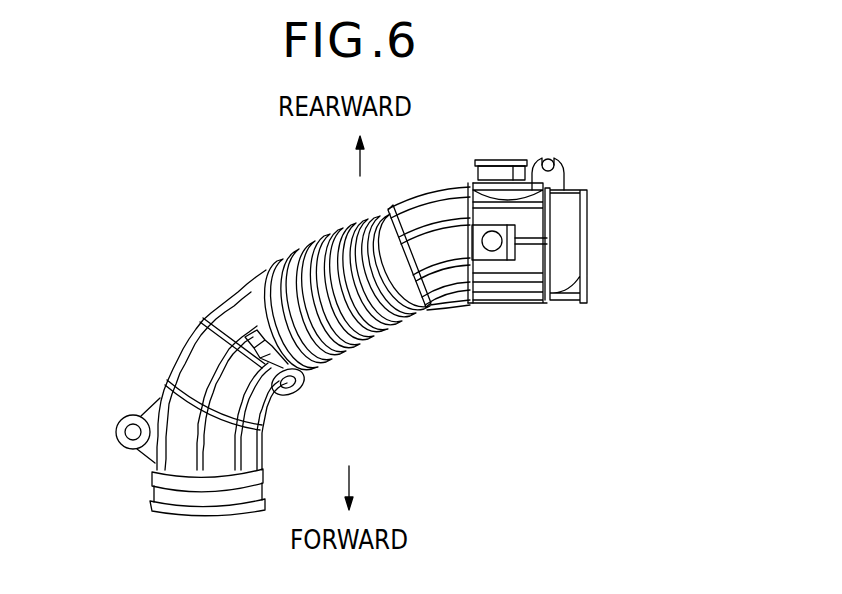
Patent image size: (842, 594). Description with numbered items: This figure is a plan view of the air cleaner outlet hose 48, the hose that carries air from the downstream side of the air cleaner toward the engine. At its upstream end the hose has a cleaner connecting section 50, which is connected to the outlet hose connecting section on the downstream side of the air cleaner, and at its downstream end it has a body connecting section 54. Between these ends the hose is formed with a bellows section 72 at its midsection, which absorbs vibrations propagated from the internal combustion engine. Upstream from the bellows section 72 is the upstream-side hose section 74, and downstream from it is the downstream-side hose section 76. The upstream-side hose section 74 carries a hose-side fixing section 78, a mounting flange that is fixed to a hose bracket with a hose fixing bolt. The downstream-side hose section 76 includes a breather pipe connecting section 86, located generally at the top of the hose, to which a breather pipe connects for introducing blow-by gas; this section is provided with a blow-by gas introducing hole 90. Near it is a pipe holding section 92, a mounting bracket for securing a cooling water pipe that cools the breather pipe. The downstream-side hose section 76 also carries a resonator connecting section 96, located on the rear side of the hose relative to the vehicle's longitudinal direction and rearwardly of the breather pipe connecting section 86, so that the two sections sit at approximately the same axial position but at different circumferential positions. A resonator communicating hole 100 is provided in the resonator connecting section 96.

The air cleaner outlet hose 48 is at (250, 245).
The cleaner connecting section 50 is at (168, 500).
The body connecting section 54 is at (573, 247).
The bellows section 72 is at (290, 257).
The upstream-side hose section 74 is at (183, 368).
The downstream-side hose section 76 is at (430, 193).
The hose-side fixing section 78 is at (143, 453).
The breather pipe connecting section 86 is at (483, 260).
The blow-by gas introducing hole 90 is at (495, 251).
The pipe holding section 92 is at (560, 175).
The resonator connecting section 96 is at (478, 173).
The resonator communicating hole 100 is at (513, 170).